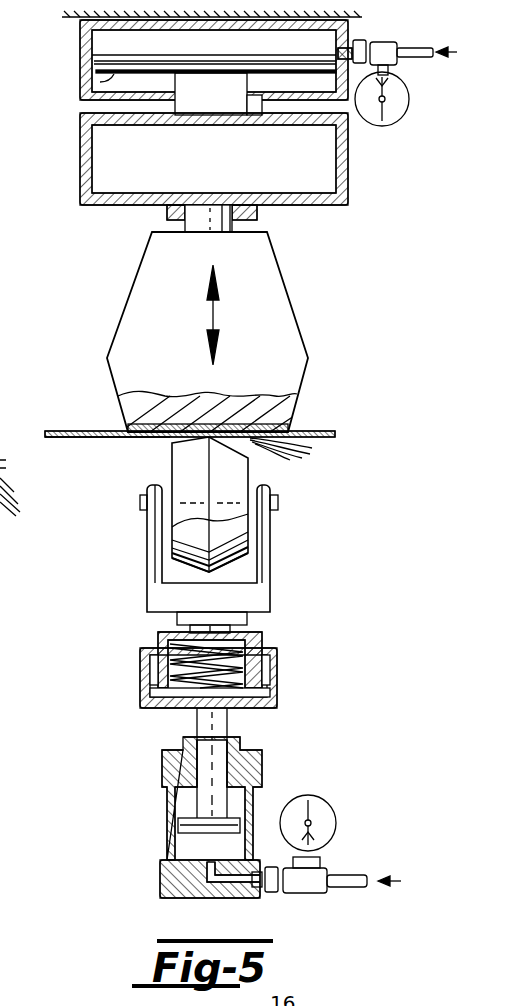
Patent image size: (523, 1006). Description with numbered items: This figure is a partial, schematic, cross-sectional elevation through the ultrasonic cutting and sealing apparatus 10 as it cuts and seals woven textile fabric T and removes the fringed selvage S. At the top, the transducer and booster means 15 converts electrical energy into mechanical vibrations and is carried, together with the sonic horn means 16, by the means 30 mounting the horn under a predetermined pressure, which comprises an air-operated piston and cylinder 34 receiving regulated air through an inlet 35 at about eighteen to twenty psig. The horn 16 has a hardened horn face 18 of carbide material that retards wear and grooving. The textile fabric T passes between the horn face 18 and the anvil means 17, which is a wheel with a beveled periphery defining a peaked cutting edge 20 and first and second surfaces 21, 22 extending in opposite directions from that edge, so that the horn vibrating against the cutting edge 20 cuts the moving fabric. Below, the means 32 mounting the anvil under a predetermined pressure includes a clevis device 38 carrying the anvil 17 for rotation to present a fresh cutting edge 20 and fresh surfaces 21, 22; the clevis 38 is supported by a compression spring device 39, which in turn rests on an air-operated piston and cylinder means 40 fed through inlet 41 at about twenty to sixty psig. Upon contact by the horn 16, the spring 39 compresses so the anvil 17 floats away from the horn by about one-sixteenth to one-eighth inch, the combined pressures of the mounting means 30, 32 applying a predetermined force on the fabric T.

The ultrasonic cutting and sealing apparatus 10 is at (161, 332).
The transducer and booster means 15 is at (70, 156).
The sonic horn means 16 is at (112, 333).
The anvil means 17 is at (264, 470).
The hardened horn face 18 is at (150, 438).
The peaked cutting edge 20 is at (209, 528).
The first surface 21 is at (209, 548).
The second surface 22 is at (209, 538).
The means mounting the sonic horn means 30 is at (70, 46).
The means mounting the anvil means 32 is at (148, 766).
The air-operated piston and cylinder 34 is at (100, 82).
The inlet 35 is at (350, 48).
The clevis device 38 is at (177, 598).
The compression spring device 39 is at (140, 682).
The air-operated piston and cylinder means 40 is at (185, 812).
The inlet 41 is at (262, 893).
The textile fabric T is at (66, 432).
The fringed selvage S is at (304, 450).